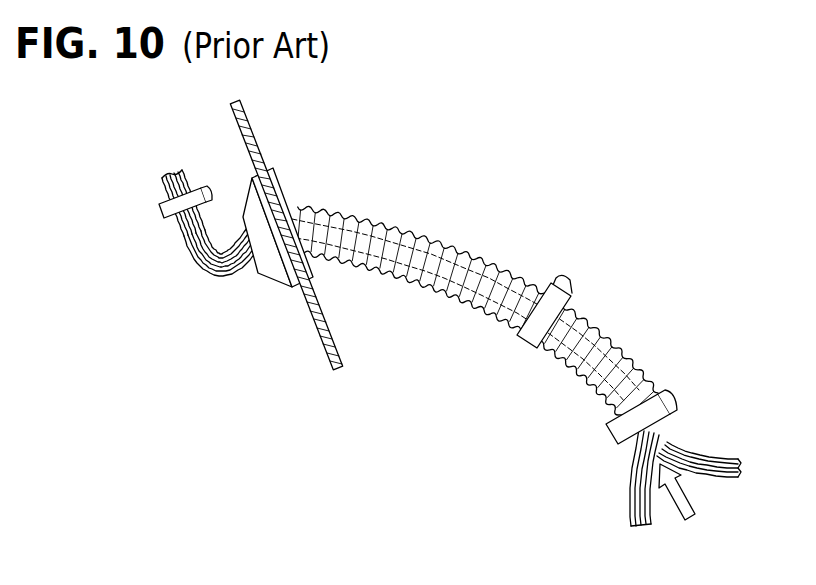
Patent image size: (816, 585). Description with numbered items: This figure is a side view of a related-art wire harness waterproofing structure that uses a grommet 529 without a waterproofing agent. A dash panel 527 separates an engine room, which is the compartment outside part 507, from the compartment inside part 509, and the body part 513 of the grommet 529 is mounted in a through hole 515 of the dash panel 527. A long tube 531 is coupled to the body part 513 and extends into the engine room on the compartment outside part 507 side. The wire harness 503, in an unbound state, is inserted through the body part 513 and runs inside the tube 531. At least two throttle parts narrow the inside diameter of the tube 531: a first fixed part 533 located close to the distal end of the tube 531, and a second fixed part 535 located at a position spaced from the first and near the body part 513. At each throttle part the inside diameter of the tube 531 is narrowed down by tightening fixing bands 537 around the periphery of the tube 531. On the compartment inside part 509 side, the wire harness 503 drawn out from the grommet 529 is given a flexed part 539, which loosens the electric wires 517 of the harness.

The compartment outside part 507 is at (514, 314).
The compartment inside part 509 is at (172, 250).
The wire harness 503 is at (178, 256).
The body part 513 is at (279, 274).
The through hole 515 is at (278, 176).
The electric wires 517 is at (166, 182).
The dash panel 527 is at (255, 123).
The grommet 529 is at (473, 282).
The tube 531 is at (397, 225).
The first fixed part 533 is at (680, 386).
The second fixed part 535 is at (572, 258).
The fixing bands 537 is at (205, 189).
The flexed part 539 is at (205, 287).